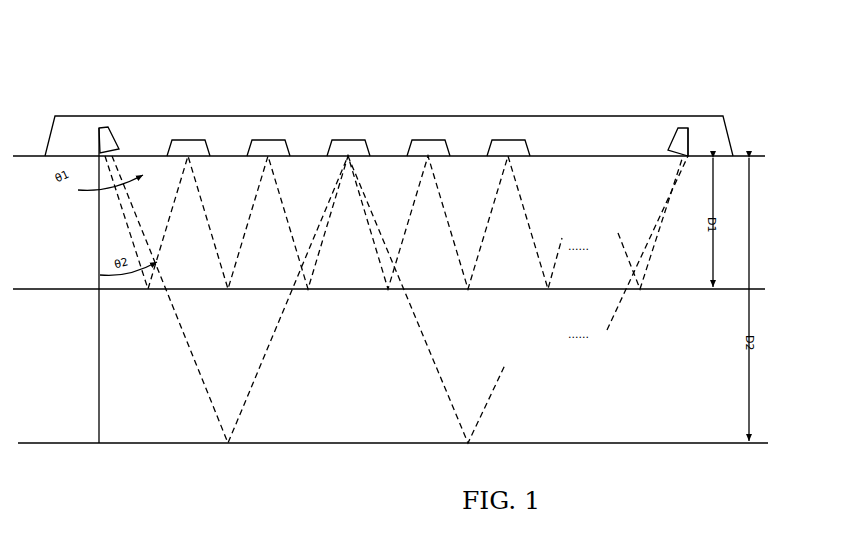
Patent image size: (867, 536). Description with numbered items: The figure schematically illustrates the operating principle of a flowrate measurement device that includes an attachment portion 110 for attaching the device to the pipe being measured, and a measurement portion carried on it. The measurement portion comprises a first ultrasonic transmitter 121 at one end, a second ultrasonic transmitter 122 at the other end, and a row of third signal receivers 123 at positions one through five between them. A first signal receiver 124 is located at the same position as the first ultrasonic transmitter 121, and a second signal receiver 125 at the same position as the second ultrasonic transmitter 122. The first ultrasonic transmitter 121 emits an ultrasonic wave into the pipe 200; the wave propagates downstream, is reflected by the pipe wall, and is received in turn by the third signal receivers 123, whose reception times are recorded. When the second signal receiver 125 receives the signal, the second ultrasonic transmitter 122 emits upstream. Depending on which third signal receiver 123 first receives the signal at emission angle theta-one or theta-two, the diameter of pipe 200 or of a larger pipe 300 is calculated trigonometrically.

The attachment portion 110 is at (358, 127).
The first ultrasonic transmitter 121 is at (110, 127).
The second ultrasonic transmitter 122 is at (682, 127).
The third signal receivers 123 is at (190, 140).
The first signal receiver 124 is at (99, 128).
The second signal receiver 125 is at (688, 128).
The pipe 200 is at (697, 289).
The pipe 300 is at (602, 443).